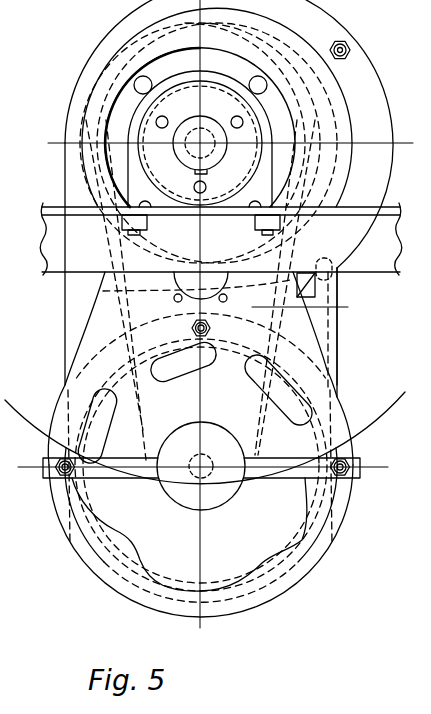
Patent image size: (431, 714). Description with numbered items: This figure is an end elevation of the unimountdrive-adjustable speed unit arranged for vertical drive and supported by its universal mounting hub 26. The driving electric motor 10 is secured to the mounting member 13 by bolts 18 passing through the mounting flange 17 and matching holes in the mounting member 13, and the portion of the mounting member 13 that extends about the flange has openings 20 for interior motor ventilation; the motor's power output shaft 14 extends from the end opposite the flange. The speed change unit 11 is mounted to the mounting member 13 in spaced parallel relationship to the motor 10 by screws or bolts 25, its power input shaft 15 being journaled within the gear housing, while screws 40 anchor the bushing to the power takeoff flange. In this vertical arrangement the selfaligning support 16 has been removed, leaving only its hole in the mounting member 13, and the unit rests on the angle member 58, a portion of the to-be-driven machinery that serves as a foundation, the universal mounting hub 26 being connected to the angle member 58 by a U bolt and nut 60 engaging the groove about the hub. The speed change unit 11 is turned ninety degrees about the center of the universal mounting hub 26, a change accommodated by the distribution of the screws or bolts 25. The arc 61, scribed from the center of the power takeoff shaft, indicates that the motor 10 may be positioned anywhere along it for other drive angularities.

The driving electric motor 10 is at (343, 536).
The speed change unit 11 is at (392, 80).
The mounting member 13 is at (338, 362).
The power output shaft 14 is at (170, 512).
The power input shaft 15 is at (216, 111).
The selfaligning support 16 is at (168, 281).
The mounting flange 17 is at (343, 502).
The bolts 18 is at (346, 462).
The openings 20 is at (195, 402).
The screws or bolts 25 is at (135, 78).
The universal mounting hub 26 is at (143, 123).
The screws 40 is at (241, 121).
The angle member 58 is at (375, 272).
The U bolt and nut 60 is at (211, 175).
The arc 61 is at (218, 438).